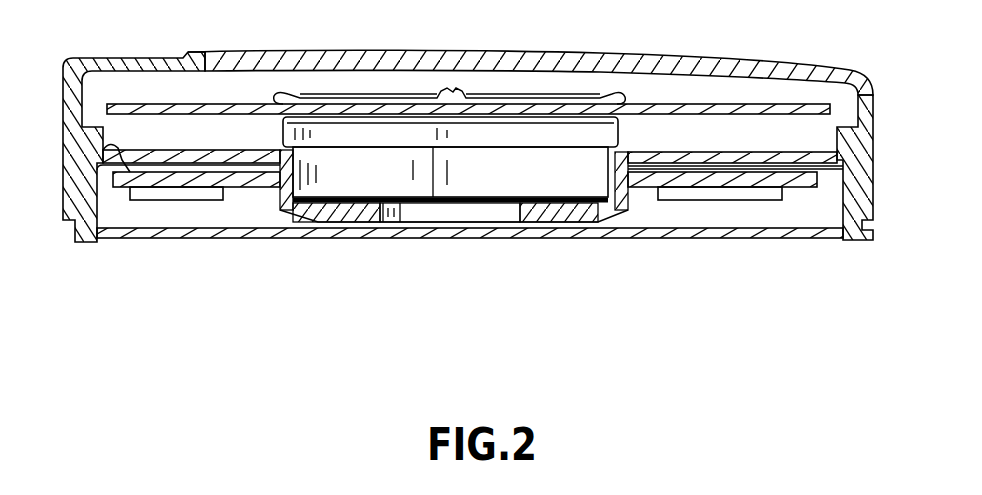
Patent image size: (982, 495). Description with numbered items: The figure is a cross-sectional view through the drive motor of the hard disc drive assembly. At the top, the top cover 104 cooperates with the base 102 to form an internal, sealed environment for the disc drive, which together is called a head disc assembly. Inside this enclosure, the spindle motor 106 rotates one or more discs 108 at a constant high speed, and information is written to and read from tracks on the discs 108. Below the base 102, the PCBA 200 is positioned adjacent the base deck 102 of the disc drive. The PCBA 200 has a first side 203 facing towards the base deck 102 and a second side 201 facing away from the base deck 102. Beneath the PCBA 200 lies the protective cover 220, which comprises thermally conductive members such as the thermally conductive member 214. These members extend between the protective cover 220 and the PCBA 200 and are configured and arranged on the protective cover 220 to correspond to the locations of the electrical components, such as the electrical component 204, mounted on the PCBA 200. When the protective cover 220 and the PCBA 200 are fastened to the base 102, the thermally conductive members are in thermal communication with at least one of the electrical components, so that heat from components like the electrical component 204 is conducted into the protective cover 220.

The base 102 is at (873, 167).
The top cover 104 is at (447, 50).
The spindle motor 106 is at (353, 187).
The disc 108 is at (708, 103).
The PCBA 200 is at (798, 187).
The second side 201 is at (243, 190).
The first side 203 is at (127, 172).
The electrical component 204 is at (140, 200).
The thermally conductive member 214 is at (707, 200).
The protective cover 220 is at (472, 229).